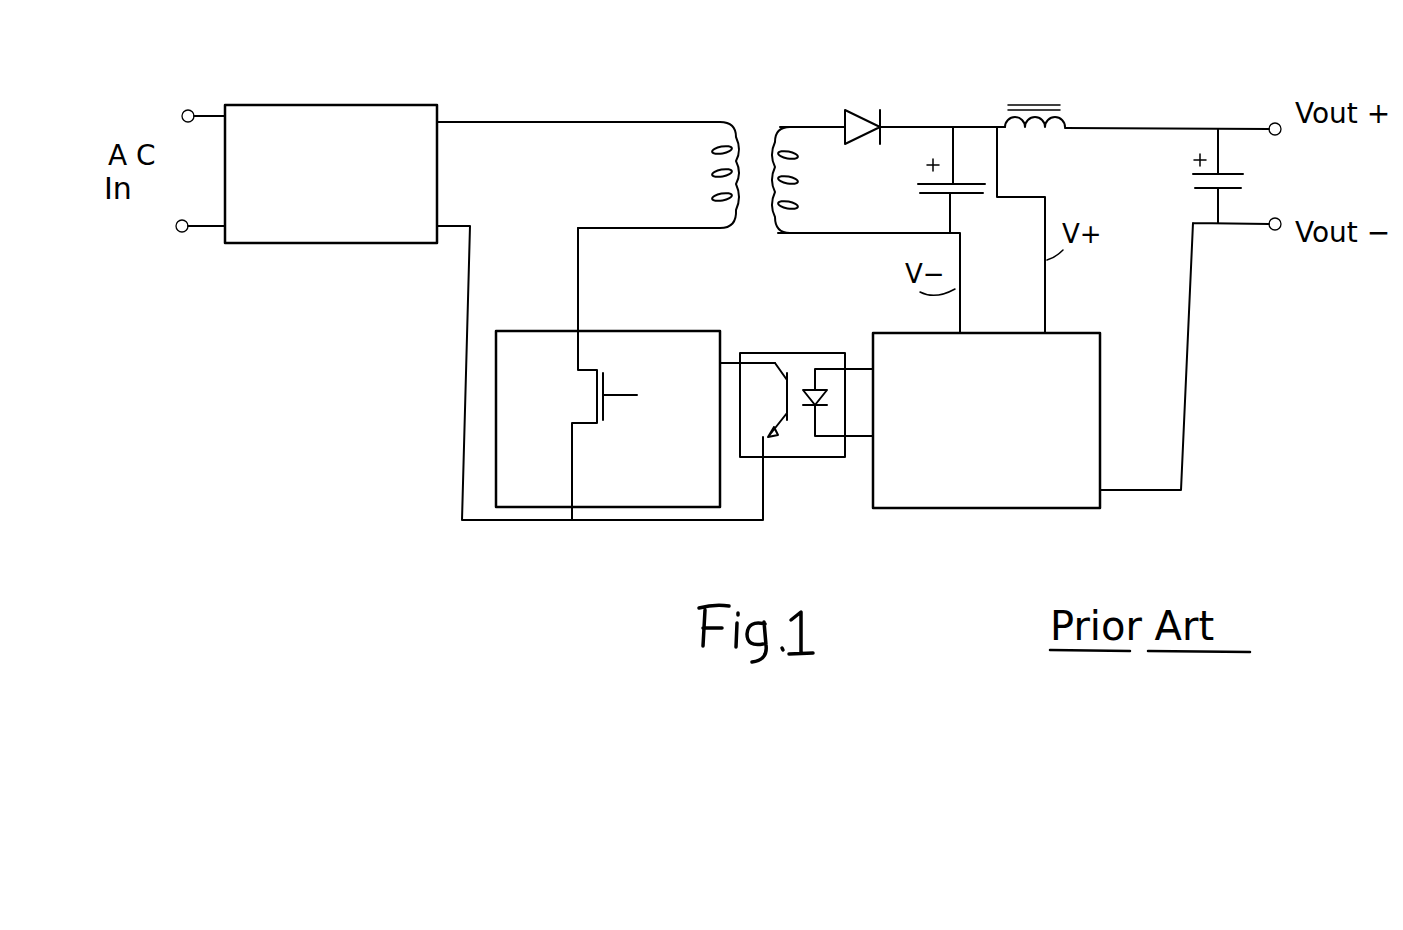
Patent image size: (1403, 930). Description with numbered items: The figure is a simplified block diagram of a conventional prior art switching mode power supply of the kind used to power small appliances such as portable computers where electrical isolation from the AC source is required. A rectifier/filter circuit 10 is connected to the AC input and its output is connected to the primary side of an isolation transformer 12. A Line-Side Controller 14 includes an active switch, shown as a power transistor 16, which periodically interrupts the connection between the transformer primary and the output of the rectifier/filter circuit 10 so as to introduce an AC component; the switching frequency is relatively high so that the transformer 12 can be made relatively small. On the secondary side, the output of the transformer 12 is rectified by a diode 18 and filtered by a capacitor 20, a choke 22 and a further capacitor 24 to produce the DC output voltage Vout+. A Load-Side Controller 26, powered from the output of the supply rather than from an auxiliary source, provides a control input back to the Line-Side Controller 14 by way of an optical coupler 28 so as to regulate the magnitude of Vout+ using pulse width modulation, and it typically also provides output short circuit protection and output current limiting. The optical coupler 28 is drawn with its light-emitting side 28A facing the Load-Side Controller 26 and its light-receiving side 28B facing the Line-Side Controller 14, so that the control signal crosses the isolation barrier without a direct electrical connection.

The rectifier/filter circuit 10 is at (360, 103).
The isolation transformer 12 is at (764, 108).
The Line-Side Controller 14 is at (647, 325).
The power transistor 16 is at (592, 366).
The diode 18 is at (865, 92).
The capacitor 20 is at (928, 198).
The choke 22 is at (1040, 95).
The capacitor 24 is at (1247, 181).
The Load-Side Controller 26 is at (984, 510).
The optical coupler 28 is at (810, 460).
The optocoupler photodiode 28A is at (830, 395).
The optocoupler phototransistor 28B is at (768, 395).